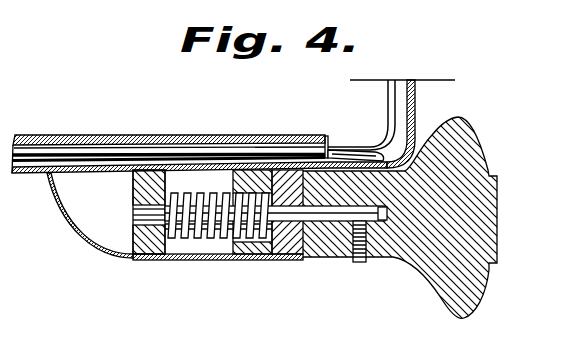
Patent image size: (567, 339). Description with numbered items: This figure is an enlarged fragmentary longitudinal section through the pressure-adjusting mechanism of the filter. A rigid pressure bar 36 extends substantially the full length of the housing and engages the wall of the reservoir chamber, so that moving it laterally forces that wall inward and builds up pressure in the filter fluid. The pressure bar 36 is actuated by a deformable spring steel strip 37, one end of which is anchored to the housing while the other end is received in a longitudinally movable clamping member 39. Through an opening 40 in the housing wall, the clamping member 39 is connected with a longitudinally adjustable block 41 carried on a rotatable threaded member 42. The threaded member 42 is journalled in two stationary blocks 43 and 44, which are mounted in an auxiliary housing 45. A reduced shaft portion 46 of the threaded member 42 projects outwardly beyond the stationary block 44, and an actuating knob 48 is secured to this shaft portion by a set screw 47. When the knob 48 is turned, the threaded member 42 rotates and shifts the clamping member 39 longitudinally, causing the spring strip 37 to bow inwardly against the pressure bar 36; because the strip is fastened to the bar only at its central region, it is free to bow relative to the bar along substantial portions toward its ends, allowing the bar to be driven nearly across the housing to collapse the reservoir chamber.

The pressure bar 36 is at (295, 136).
The spring steel strip 37 is at (329, 150).
The clamping member 39 is at (383, 153).
The opening 40 is at (167, 158).
The adjustable block 41 is at (212, 258).
The threaded member 42 is at (200, 245).
The stationary block 43 is at (148, 256).
The stationary block 44 is at (297, 242).
The auxiliary housing 45 is at (92, 245).
The reduced shaft portion 46 is at (337, 232).
The set screw 47 is at (372, 258).
The actuating knob 48 is at (447, 283).